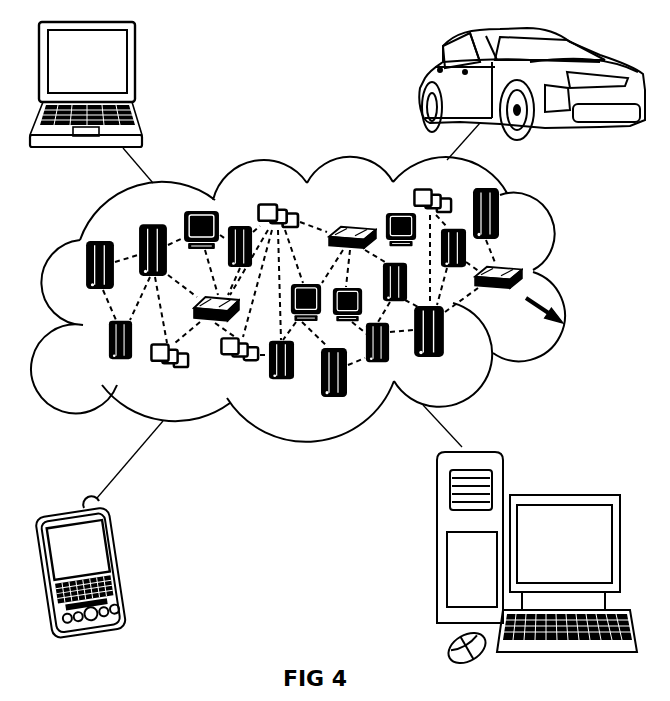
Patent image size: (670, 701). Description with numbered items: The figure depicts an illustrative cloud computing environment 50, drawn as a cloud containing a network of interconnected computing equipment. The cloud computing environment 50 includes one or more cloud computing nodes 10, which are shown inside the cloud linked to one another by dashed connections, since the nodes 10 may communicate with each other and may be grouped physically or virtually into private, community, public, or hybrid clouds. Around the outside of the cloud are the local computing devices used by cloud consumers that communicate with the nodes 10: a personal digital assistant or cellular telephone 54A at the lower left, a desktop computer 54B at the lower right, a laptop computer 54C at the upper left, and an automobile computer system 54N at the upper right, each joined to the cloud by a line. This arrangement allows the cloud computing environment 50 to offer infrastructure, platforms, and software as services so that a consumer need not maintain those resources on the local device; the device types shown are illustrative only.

The laptop computer 54C is at (132, 72).
The automobile computer system 54N is at (420, 88).
The personal digital assistant or cellular telephone 54A is at (122, 566).
The desktop computer 54B is at (562, 493).
The cloud computing environment 50 is at (560, 280).
The cloud computing node 10 is at (557, 314).